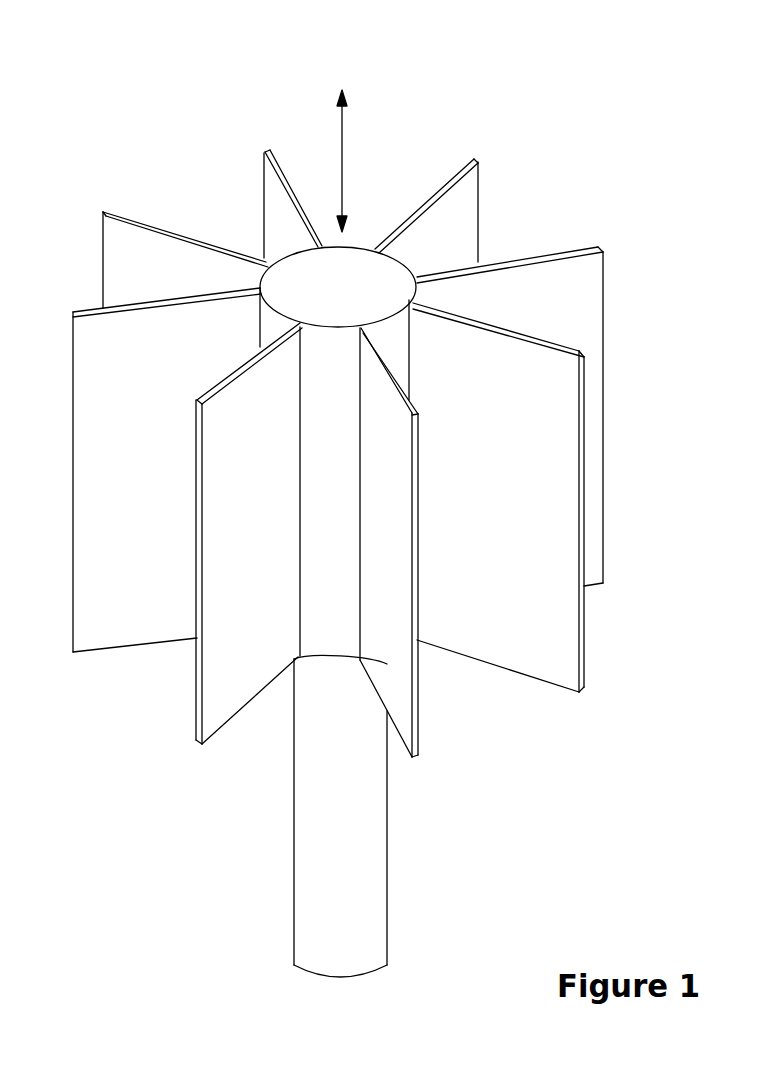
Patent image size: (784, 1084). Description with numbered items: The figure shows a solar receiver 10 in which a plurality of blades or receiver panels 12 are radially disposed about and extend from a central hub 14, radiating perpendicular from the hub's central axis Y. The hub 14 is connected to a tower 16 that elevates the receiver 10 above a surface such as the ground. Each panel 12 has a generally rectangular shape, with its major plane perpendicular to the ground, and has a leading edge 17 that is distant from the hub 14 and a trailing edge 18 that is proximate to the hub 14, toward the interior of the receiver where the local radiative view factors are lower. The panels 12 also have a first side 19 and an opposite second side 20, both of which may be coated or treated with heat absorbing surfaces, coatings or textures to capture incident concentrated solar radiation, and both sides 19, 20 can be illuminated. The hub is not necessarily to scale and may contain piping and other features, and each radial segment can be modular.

The receiver 10 is at (158, 47).
The receiver panels 12 is at (578, 250).
The central hub 14 is at (342, 282).
The tower 16 is at (372, 888).
The leading edge 17 is at (417, 498).
The trailing edge 18 is at (360, 502).
The first side 19 is at (387, 663).
The second side 20 is at (102, 575).